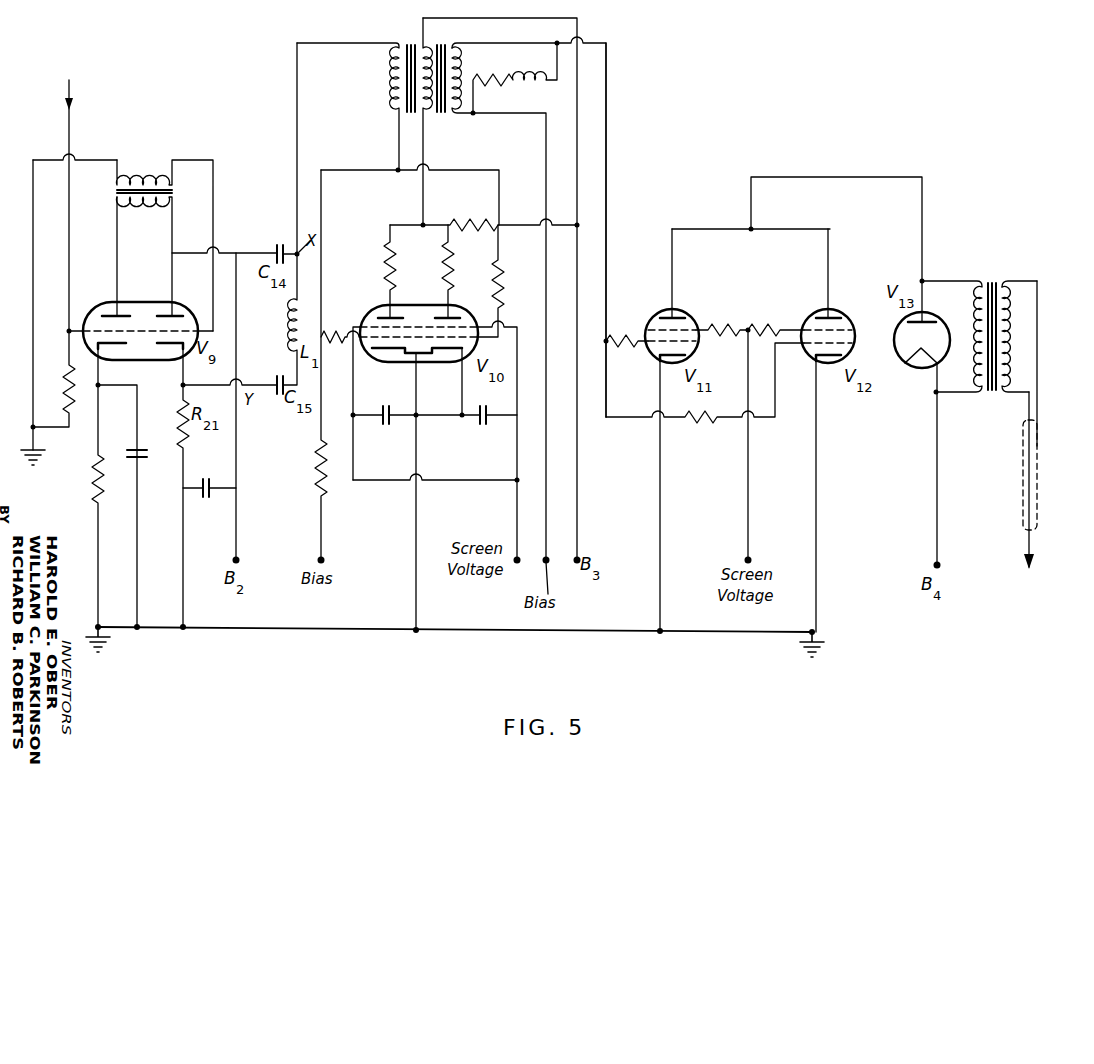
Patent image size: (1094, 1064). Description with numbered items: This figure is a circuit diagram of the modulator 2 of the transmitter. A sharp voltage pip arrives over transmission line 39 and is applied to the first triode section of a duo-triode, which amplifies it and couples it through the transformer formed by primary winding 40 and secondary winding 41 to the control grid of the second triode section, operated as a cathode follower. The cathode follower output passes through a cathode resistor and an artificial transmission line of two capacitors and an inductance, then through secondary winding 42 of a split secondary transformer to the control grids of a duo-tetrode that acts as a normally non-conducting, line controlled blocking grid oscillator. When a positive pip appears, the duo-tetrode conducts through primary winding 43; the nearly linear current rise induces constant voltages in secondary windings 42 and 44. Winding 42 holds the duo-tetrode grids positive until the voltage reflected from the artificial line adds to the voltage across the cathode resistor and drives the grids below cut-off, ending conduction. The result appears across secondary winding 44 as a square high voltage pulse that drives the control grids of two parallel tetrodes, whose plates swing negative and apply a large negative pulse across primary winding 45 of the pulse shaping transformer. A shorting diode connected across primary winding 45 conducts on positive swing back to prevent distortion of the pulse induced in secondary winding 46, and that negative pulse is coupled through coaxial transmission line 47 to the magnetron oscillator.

The modulator 2 is at (630, 148).
The transmission line 39 is at (72, 132).
The primary winding 40 is at (156, 203).
The secondary winding 41 is at (128, 176).
The secondary winding 42 is at (396, 74).
The primary winding 43 is at (420, 47).
The secondary winding 44 is at (462, 76).
The primary winding 45 is at (982, 284).
The secondary winding 46 is at (999, 390).
The coaxial transmission line 47 is at (1038, 446).